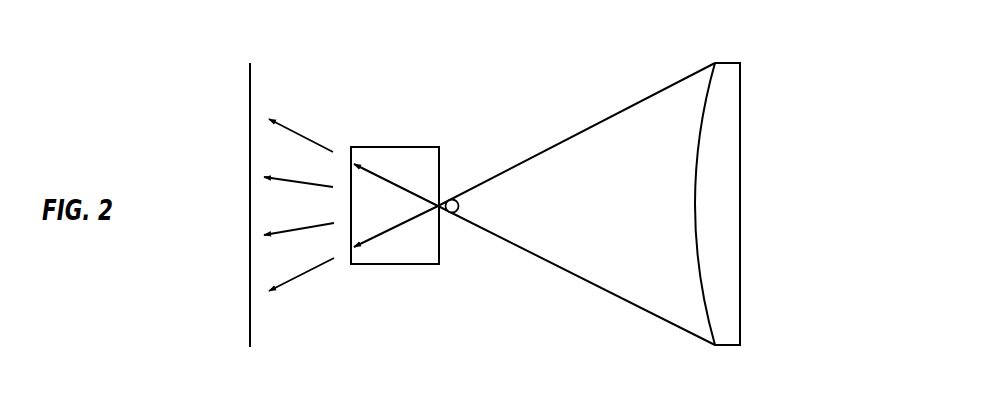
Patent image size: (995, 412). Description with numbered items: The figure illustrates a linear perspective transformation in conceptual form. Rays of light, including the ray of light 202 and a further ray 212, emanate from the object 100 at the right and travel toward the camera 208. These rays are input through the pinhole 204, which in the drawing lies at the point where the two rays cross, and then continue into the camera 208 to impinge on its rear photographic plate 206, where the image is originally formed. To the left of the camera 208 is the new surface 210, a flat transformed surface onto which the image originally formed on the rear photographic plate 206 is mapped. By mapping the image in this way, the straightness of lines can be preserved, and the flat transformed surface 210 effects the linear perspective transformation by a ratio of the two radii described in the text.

The object 100 is at (740, 90).
The ray of light 202 is at (610, 295).
The pinhole 204 is at (459, 202).
The rear photographic plate 206 is at (333, 152).
The camera 208 is at (403, 147).
The new surface 210 is at (250, 103).
The second light ray 212 is at (610, 115).